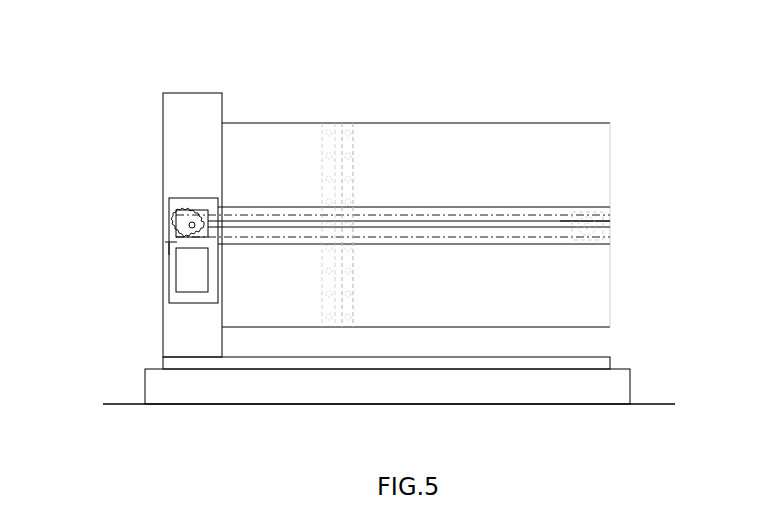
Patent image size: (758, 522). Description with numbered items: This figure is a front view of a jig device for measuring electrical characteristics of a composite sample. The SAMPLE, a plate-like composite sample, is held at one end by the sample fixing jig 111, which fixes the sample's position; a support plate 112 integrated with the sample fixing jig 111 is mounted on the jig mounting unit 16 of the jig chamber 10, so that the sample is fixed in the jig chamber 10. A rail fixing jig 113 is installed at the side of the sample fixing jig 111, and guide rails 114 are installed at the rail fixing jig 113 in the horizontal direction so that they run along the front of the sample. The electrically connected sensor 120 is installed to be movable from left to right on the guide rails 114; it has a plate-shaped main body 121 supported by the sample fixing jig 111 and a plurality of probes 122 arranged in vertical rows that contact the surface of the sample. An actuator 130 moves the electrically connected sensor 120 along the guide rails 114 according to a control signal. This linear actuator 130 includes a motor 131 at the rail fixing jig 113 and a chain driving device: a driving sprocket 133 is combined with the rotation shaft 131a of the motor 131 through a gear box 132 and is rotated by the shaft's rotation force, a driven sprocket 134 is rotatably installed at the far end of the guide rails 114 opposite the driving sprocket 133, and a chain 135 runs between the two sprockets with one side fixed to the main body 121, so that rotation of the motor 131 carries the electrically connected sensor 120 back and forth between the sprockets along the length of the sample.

The jig chamber 10 is at (648, 404).
The jig mounting unit 16 is at (517, 383).
The sample fixing jig 111 is at (222, 93).
The support plate 112 is at (605, 363).
The rail fixing jig 113 is at (190, 198).
The guide rails 114 is at (258, 206).
The electrically connected sensor 120 is at (358, 170).
The main body 121 is at (358, 195).
The probes 122 is at (348, 122).
The actuator 130 is at (168, 250).
The motor 131 is at (182, 278).
The rotation shaft 131a is at (165, 242).
The gear box 132 is at (178, 222).
The driving sprocket 133 is at (180, 212).
The driven sprocket 134 is at (590, 215).
The chain 135 is at (521, 210).
The sample SAMPLE is at (700, 73).